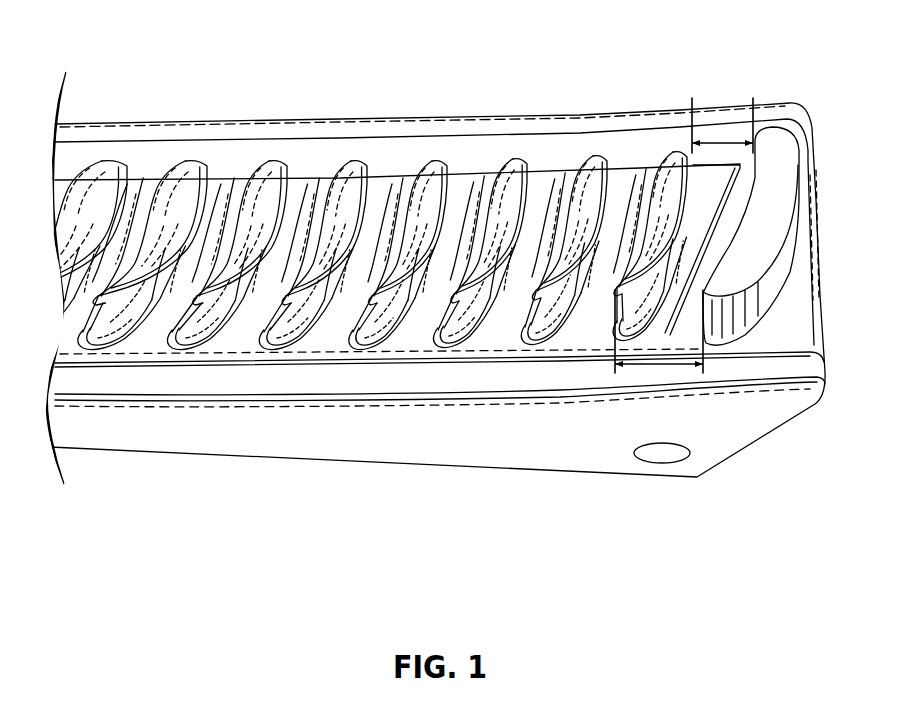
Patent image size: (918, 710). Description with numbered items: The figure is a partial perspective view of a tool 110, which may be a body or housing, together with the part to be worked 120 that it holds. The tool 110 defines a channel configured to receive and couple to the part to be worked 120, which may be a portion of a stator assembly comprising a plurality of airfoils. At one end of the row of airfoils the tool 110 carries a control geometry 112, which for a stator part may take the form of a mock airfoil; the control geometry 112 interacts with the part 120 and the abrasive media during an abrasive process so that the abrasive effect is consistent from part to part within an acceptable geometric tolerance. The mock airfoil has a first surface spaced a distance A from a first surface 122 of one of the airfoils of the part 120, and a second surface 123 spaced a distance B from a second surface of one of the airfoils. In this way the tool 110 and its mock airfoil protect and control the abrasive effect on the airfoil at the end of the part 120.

The tool 110 is at (408, 150).
The control geometry 112 is at (780, 137).
The part to be worked 120 is at (322, 362).
The first surface 122 is at (657, 370).
The second surface 123 is at (692, 153).
The distance A is at (612, 272).
The distance B is at (725, 140).